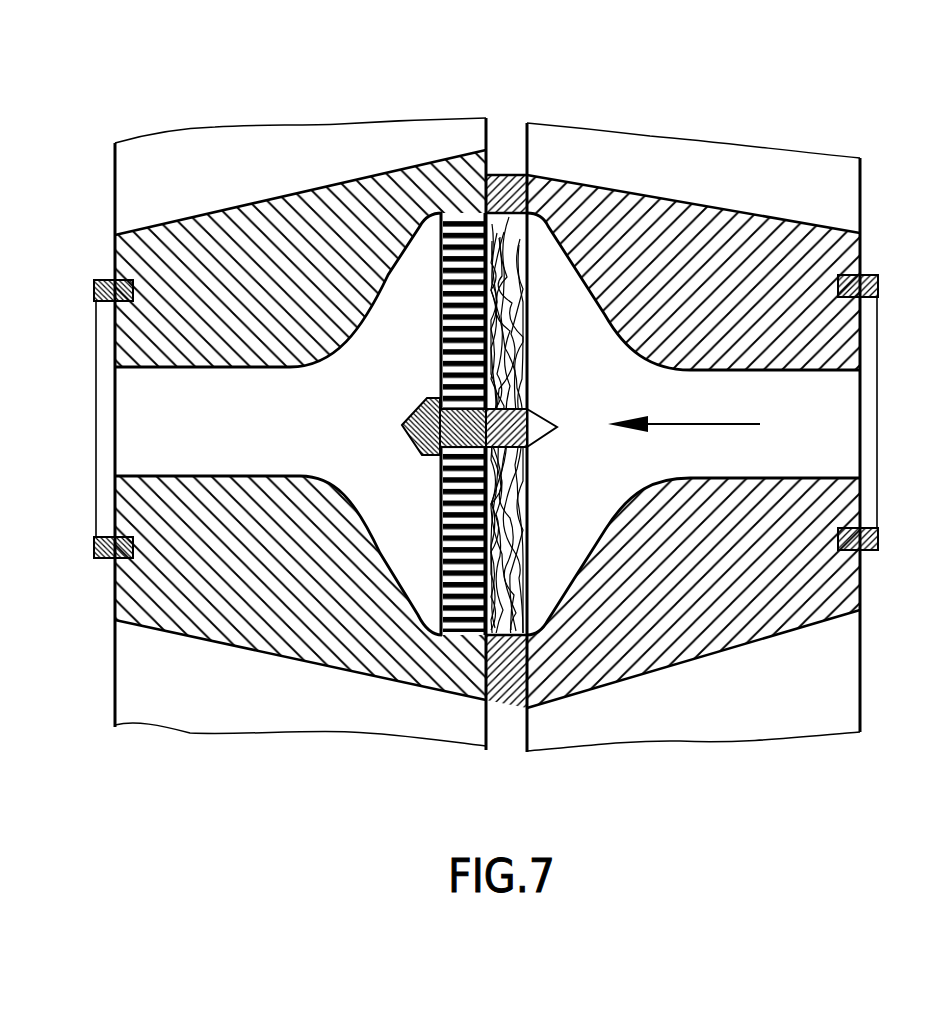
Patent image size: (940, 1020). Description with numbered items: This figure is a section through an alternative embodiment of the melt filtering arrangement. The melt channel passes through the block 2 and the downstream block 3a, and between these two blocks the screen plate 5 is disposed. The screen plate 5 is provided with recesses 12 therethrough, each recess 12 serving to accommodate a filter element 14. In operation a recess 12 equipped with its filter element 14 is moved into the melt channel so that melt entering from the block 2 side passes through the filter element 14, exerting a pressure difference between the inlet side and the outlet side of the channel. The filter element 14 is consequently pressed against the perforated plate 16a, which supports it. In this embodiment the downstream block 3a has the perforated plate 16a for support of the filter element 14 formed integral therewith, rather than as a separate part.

The block 2 is at (813, 237).
The downstream block 3a is at (213, 618).
The screen plate 5 is at (497, 716).
The recess 12 is at (600, 188).
The filter element 14 is at (528, 358).
The perforated plate 16a is at (440, 350).